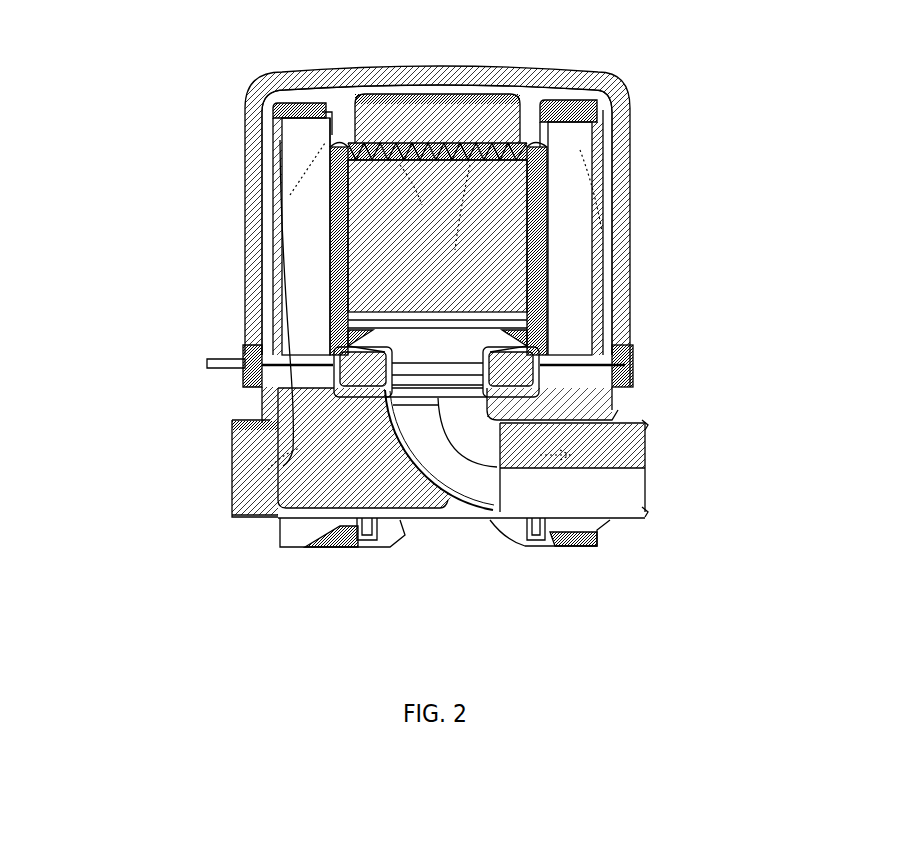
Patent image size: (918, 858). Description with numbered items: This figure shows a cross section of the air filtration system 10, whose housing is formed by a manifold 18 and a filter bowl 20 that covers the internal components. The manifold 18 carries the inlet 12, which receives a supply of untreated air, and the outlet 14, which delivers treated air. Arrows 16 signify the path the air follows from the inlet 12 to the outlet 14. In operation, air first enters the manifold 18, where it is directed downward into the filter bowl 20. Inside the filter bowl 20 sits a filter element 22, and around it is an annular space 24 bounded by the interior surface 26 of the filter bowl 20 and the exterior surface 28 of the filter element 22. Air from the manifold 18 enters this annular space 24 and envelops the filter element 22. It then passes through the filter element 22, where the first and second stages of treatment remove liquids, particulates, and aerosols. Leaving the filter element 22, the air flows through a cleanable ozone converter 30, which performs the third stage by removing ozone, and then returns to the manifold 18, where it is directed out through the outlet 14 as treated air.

The air filtration system 10 is at (165, 134).
The inlet 12 is at (247, 493).
The outlet 14 is at (645, 442).
The arrows 16 is at (437, 236).
The manifold 18 is at (332, 496).
The filter bowl 20 is at (423, 82).
The filter element 22 is at (585, 307).
The annular space 24 is at (598, 198).
The interior surface 26 is at (567, 152).
The exterior surface 28 is at (567, 152).
The cleanable ozone converter 30 is at (417, 298).